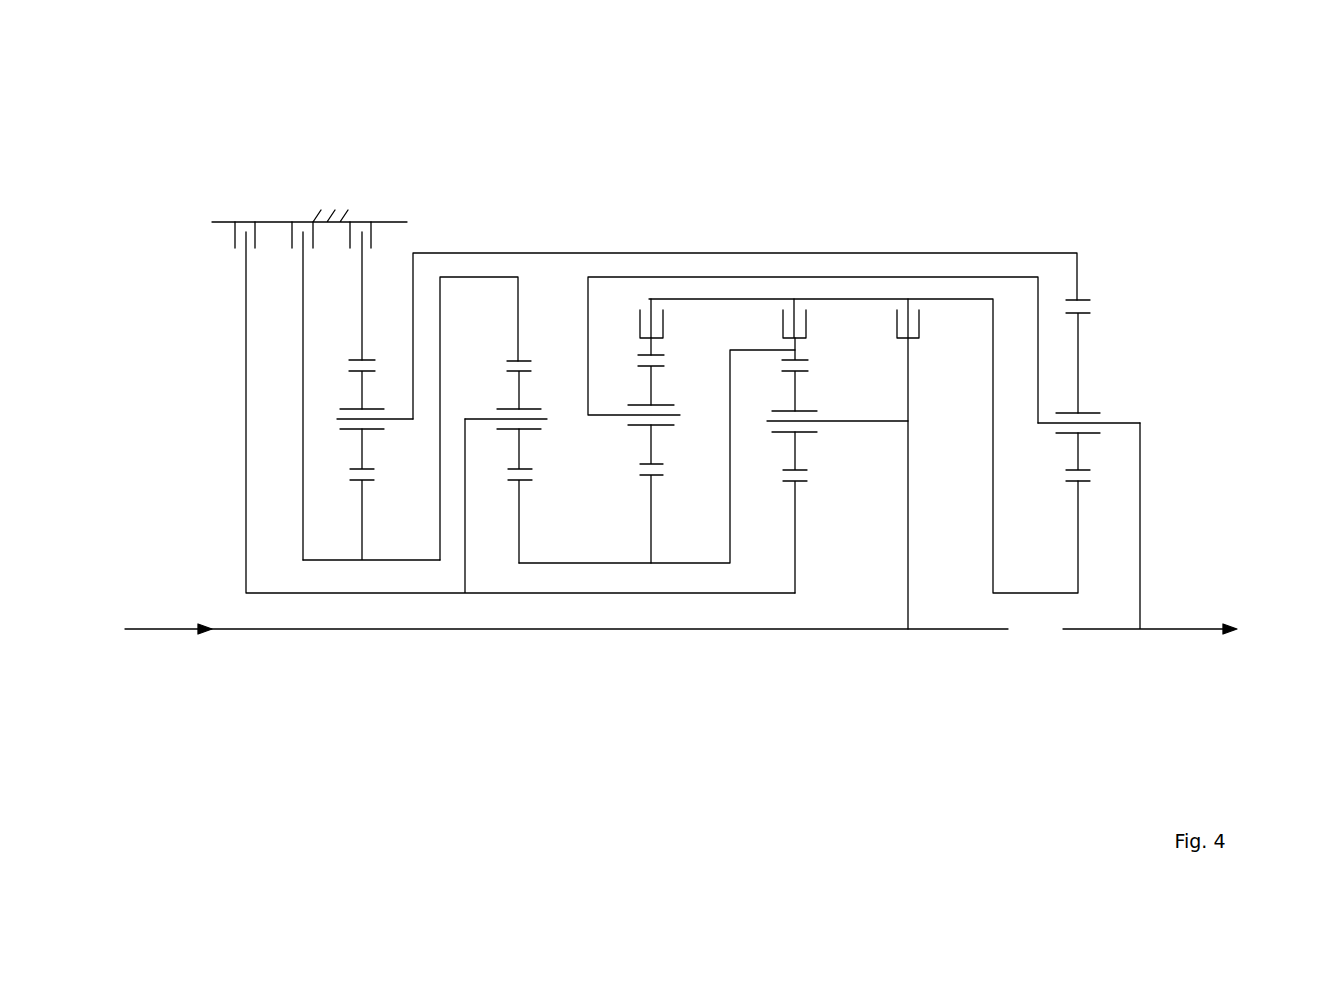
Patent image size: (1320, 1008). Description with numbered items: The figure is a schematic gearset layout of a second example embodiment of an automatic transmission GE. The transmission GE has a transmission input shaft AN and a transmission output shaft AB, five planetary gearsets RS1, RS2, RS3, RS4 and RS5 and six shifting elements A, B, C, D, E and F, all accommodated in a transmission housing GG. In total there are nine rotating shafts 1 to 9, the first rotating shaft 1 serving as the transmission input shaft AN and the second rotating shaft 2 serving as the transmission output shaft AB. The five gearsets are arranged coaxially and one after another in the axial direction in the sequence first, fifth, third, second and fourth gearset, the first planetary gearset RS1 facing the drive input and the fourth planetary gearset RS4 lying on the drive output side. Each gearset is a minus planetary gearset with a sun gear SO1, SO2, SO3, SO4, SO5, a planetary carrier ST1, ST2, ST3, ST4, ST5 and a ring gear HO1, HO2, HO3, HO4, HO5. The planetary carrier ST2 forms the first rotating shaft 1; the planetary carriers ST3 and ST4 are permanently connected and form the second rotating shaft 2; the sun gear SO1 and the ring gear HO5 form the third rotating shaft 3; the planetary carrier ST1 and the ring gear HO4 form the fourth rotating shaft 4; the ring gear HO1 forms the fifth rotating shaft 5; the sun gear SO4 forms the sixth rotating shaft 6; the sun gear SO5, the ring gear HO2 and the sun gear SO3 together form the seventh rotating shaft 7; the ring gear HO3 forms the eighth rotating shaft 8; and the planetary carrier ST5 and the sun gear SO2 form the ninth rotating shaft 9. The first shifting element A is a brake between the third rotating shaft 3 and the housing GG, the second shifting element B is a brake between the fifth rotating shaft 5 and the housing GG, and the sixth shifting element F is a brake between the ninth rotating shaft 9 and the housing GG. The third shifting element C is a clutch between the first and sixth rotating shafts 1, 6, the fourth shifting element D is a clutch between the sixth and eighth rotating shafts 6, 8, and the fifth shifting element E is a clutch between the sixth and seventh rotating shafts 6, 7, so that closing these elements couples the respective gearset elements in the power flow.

The first rotating shaft 1 is at (262, 632).
The second rotating shaft 2 is at (1140, 484).
The third rotating shaft 3 is at (483, 276).
The fourth rotating shaft 4 is at (895, 253).
The fifth rotating shaft 5 is at (360, 280).
The sixth rotating shaft 6 is at (955, 298).
The seventh rotating shaft 7 is at (728, 413).
The eighth rotating shaft 8 is at (645, 346).
The ninth rotating shaft 9 is at (555, 595).
The transmission housing GG is at (316, 214).
The transmission GE is at (1010, 155).
The transmission input shaft AN is at (183, 615).
The transmission output shaft AB is at (1201, 615).
The first shifting element A is at (300, 377).
The second shifting element B is at (364, 221).
The third shifting element C is at (897, 464).
The fourth shifting element D is at (662, 318).
The fifth shifting element E is at (784, 318).
The sixth shifting element F is at (243, 221).
The ring gear of the first planetary gearset HO1 is at (360, 332).
The first planetary gearset RS1 is at (345, 440).
The planetary carrier of the first planetary gearset ST1 is at (338, 419).
The sun gear of the first planetary gearset SO1 is at (362, 532).
The ring gear of the second planetary gearset HO2 is at (797, 352).
The second planetary gearset RS2 is at (775, 450).
The planetary carrier of the second planetary gearset ST2 is at (873, 421).
The sun gear of the second planetary gearset SO2 is at (795, 540).
The ring gear of the third planetary gearset HO3 is at (648, 352).
The third planetary gearset RS3 is at (665, 443).
The planetary carrier of the third planetary gearset ST3 is at (603, 418).
The sun gear of the third planetary gearset SO3 is at (651, 518).
The ring gear of the fourth planetary gearset HO4 is at (1080, 282).
The fourth planetary gearset RS4 is at (1062, 450).
The planetary carrier of the fourth planetary gearset ST4 is at (1113, 422).
The sun gear of the fourth planetary gearset SO4 is at (1078, 570).
The ring gear of the fifth planetary gearset HO5 is at (518, 322).
The fifth planetary gearset RS5 is at (500, 445).
The planetary carrier of the fifth planetary gearset ST5 is at (482, 419).
The sun gear of the fifth planetary gearset SO5 is at (519, 532).